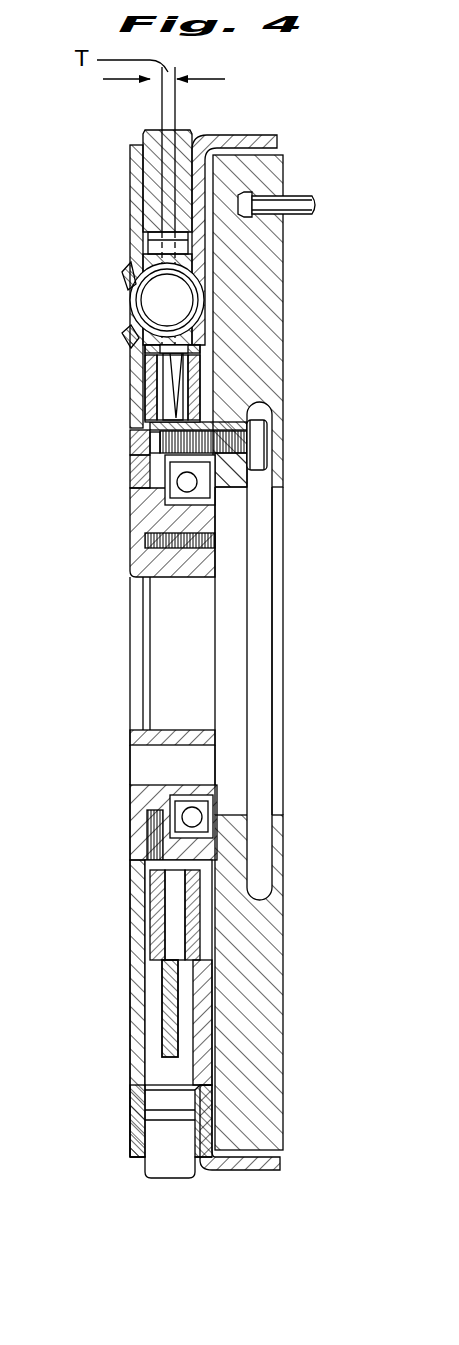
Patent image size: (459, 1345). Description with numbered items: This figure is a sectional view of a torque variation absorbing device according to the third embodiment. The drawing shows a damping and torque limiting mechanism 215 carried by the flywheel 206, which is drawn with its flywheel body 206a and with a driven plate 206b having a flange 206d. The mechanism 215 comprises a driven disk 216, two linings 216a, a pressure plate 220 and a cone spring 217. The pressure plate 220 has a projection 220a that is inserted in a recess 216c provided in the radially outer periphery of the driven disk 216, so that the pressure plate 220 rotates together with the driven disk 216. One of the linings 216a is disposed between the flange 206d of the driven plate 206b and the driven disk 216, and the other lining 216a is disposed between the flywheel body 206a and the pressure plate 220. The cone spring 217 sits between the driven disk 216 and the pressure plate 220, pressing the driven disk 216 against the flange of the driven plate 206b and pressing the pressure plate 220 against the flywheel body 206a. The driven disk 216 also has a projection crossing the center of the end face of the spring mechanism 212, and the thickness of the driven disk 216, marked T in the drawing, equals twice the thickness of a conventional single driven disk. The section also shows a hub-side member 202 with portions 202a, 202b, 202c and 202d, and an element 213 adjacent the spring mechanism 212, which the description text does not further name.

The hub 202 is at (128, 151).
The hub flange 202a is at (176, 156).
The hub body 202b is at (158, 517).
The hub side wall 202c is at (135, 211).
The hub neck portion 202d is at (197, 185).
The flywheel 206 is at (293, 158).
The flywheel body 206a is at (265, 372).
The driven plate 206b is at (140, 441).
The flange of the driven plate 206d is at (150, 913).
The spring mechanism 212 is at (128, 306).
The retaining tab 213 is at (128, 282).
The damping and torque limiting mechanism 215 is at (125, 417).
The driven disk 216 is at (170, 400).
The linings 216a is at (152, 375).
The recess 216c is at (147, 348).
The cone spring 217 is at (182, 400).
The pressure plate 220 is at (200, 362).
The projection 220a is at (198, 343).